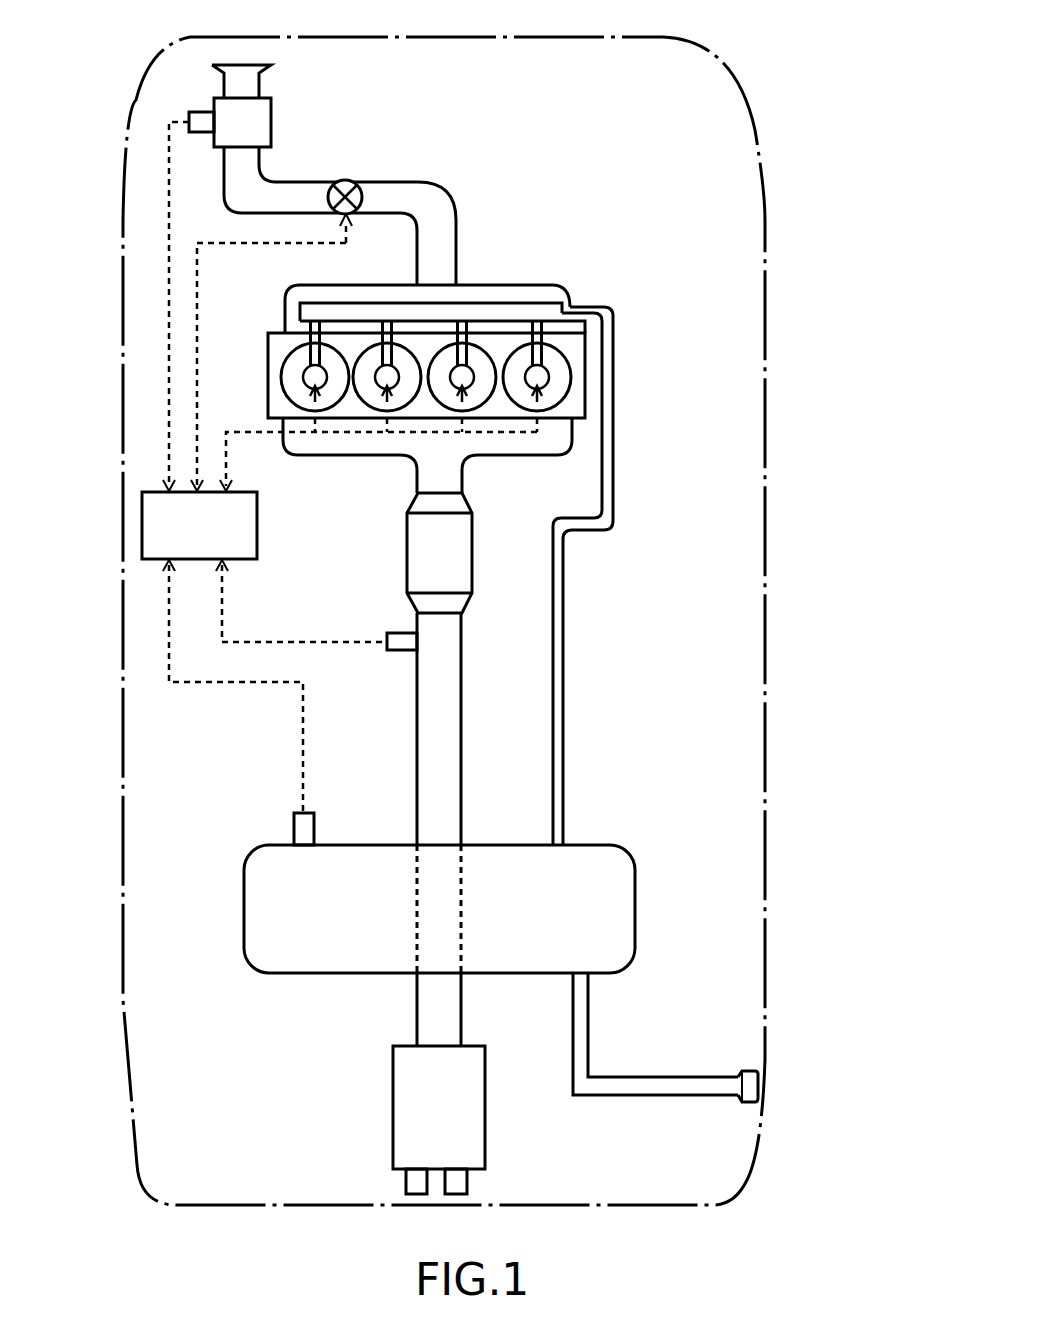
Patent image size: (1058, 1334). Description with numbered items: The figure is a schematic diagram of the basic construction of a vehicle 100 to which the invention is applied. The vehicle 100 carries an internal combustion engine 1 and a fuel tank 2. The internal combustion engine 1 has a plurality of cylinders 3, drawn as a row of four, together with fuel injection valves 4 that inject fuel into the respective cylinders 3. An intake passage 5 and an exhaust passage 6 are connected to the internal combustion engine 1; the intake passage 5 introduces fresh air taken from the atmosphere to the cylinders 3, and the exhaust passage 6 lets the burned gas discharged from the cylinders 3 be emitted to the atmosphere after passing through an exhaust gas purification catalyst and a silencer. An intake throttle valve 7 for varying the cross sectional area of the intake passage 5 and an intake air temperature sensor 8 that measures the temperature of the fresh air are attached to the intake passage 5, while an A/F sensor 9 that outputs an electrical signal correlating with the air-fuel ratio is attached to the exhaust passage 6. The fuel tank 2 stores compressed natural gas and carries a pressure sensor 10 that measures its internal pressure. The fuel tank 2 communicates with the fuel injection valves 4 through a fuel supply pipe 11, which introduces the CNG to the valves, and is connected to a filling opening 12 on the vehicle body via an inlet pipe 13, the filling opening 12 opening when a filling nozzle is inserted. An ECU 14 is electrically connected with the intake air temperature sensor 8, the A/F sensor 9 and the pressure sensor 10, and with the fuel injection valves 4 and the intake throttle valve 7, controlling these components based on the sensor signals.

The vehicle 100 is at (777, 111).
The internal combustion engine 1 is at (278, 338).
The fuel tank 2 is at (310, 973).
The cylinders 3 is at (286, 388).
The fuel injection valves 4 is at (547, 376).
The intake passage 5 is at (457, 218).
The exhaust passage 6 is at (418, 740).
The intake throttle valve 7 is at (345, 183).
The intake air temperature sensor 8 is at (200, 117).
The A/F sensor 9 is at (403, 638).
The pressure sensor 10 is at (294, 820).
The fuel supply pipe 11 is at (560, 660).
The filling opening 12 is at (760, 1088).
The inlet pipe 13 is at (650, 1080).
The ECU 14 is at (147, 522).